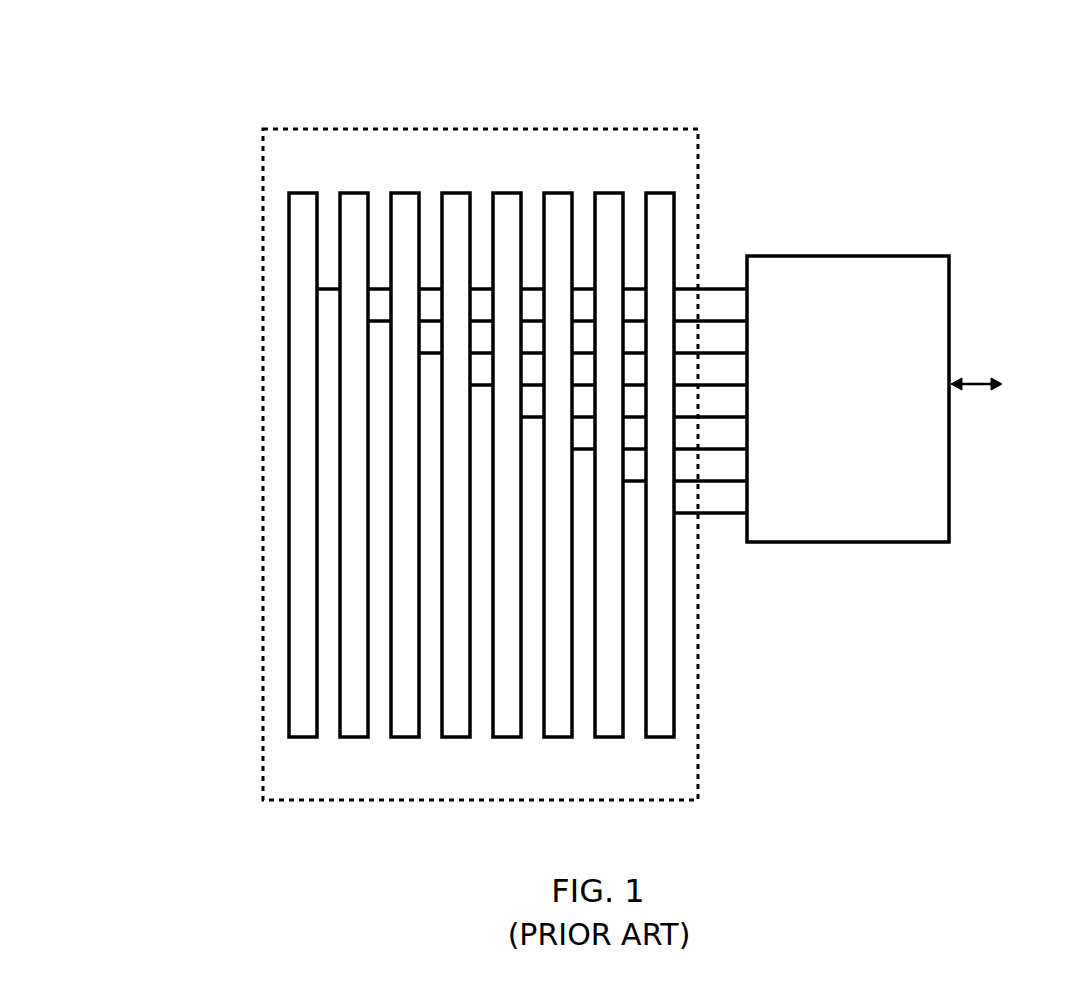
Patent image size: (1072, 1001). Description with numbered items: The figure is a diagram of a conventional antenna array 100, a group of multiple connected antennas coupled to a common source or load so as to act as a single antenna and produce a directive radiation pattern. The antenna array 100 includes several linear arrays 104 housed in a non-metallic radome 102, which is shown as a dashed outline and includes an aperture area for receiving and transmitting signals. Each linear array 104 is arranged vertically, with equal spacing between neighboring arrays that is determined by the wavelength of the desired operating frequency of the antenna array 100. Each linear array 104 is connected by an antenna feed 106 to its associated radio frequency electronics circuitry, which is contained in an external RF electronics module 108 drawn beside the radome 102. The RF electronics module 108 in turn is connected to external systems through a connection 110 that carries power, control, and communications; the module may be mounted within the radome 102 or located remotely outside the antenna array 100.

The antenna array 100 is at (187, 66).
The radome 102 is at (262, 150).
The linear array 104 is at (298, 304).
The antenna feed 106 is at (702, 287).
The RF electronics module 108 is at (888, 260).
The connection 110 is at (994, 386).